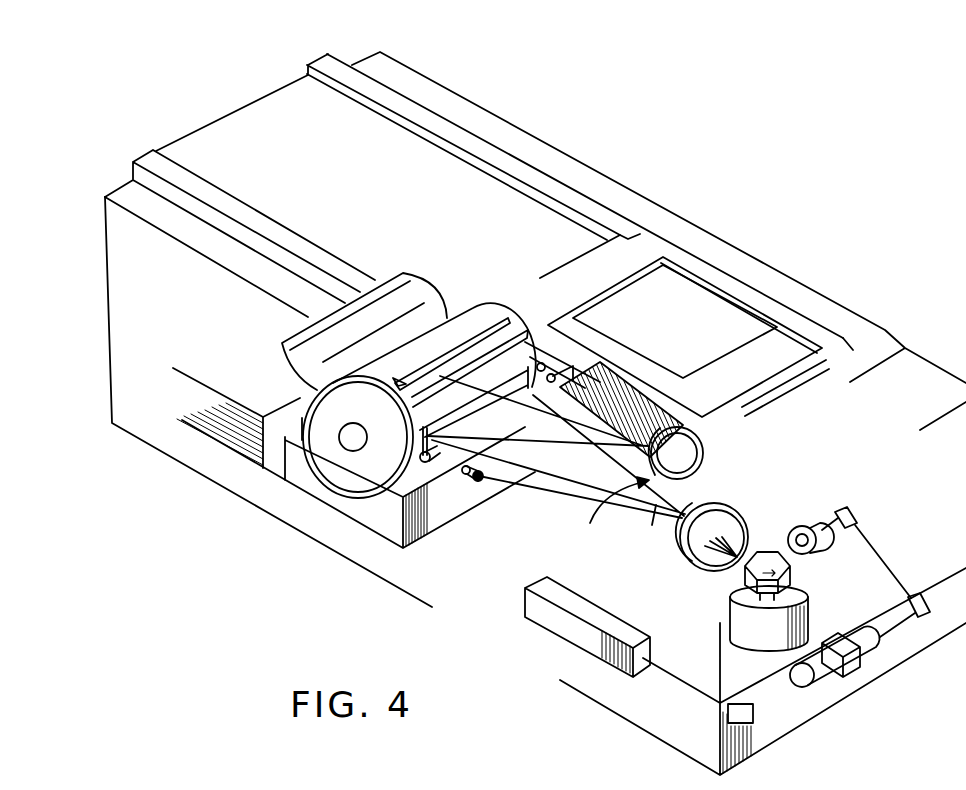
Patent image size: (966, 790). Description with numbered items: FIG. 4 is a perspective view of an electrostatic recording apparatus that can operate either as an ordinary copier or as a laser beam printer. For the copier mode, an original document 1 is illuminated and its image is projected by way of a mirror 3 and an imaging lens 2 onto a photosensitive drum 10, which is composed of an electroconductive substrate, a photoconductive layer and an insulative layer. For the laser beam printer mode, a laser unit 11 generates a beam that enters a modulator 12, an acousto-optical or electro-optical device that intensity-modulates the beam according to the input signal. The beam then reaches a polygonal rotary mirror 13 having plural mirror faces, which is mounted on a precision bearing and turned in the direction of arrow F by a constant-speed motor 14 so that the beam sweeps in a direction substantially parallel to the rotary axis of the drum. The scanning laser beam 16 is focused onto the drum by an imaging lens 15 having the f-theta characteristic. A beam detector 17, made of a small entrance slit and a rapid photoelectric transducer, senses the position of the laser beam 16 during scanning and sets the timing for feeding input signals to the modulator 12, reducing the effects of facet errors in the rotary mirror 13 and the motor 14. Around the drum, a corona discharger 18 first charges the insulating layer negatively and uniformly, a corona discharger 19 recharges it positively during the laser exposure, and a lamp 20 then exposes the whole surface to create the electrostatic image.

The original document 1 is at (648, 290).
The imaging lens 2 is at (703, 446).
The mirror 3 is at (542, 363).
The photosensitive drum 10 is at (453, 317).
The laser unit 11 is at (552, 623).
The modulator 12 is at (857, 667).
The polygonal rotary mirror 13 is at (742, 578).
The constant-speed motor 14 is at (806, 605).
The imaging lens 15 is at (736, 512).
The laser beam 16 is at (650, 521).
The beam detector 17 is at (469, 479).
The corona discharger 18 is at (513, 338).
The corona discharger 19 is at (423, 440).
The lamp 20 is at (426, 463).